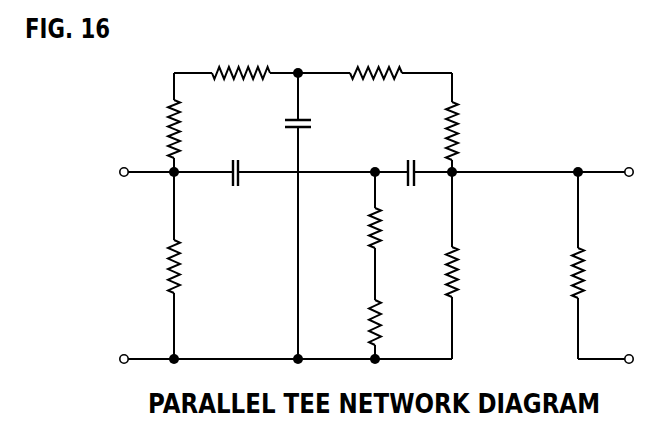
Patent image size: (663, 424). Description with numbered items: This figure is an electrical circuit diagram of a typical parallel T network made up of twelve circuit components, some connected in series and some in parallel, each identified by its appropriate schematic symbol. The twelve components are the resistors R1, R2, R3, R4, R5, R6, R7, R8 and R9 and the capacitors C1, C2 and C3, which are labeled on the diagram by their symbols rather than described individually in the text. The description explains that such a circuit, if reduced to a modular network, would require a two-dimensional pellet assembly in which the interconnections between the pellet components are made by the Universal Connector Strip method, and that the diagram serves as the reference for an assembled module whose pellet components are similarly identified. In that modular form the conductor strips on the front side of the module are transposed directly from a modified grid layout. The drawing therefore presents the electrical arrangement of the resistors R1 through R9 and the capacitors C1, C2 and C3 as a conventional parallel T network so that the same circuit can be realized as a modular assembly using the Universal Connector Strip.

The resistor R1 is at (156, 266).
The resistor R2 is at (156, 129).
The resistor R3 is at (241, 60).
The resistor R4 is at (376, 60).
The resistor R5 is at (391, 228).
The resistor R6 is at (391, 322).
The resistor R7 is at (468, 131).
The resistor R8 is at (470, 272).
The resistor R9 is at (595, 273).
The capacitor C1 is at (237, 162).
The capacitor C2 is at (314, 131).
The capacitor C3 is at (416, 161).